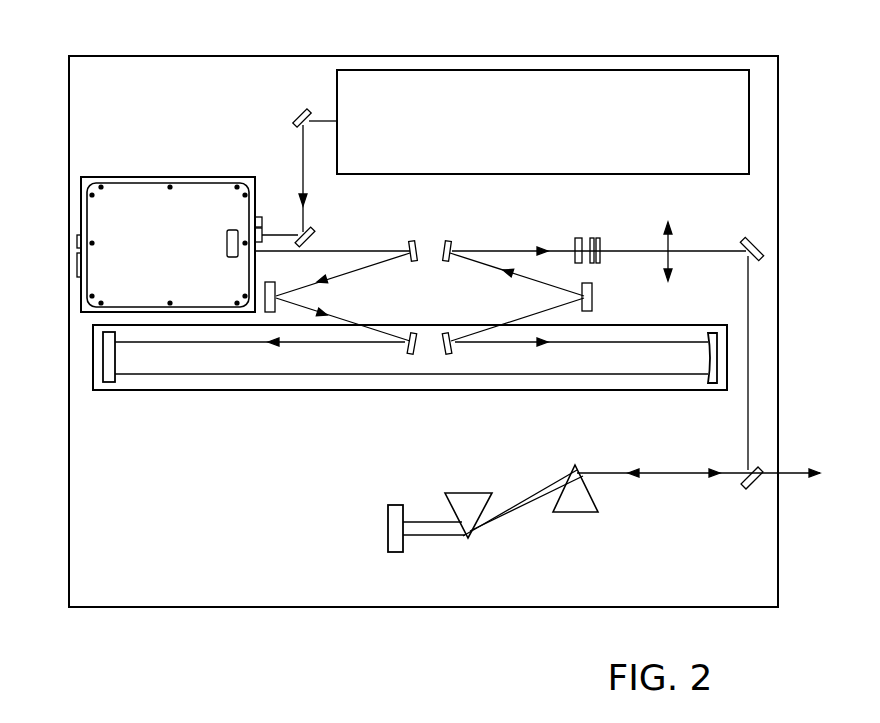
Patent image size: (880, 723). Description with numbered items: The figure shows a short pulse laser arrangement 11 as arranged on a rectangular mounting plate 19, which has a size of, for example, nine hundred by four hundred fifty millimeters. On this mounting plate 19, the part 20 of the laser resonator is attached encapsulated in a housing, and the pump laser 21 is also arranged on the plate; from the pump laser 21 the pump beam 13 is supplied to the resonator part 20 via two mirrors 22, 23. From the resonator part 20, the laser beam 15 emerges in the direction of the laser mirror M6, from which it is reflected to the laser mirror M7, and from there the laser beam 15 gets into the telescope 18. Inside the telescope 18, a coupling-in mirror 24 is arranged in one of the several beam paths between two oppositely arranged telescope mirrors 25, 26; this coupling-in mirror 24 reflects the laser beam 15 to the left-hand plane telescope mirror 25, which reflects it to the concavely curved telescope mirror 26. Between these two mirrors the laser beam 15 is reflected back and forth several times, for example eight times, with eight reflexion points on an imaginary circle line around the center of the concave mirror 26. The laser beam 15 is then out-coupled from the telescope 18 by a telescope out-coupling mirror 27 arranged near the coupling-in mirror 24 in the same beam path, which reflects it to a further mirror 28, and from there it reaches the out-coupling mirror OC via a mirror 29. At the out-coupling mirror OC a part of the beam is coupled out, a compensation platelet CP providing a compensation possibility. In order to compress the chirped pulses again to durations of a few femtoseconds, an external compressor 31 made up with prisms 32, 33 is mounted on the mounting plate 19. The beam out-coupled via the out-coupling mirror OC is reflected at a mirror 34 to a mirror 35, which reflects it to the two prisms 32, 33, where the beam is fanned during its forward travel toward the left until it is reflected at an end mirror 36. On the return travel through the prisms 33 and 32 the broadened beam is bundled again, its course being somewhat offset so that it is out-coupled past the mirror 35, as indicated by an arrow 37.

The short pulse laser arrangement 11 is at (193, 145).
The pump beam 13 is at (300, 153).
The laser beam 15 is at (497, 250).
The telescope 18 is at (703, 327).
The mounting plate 19 is at (580, 56).
The part of the laser resonator 20 is at (157, 177).
The pump laser 21 is at (337, 89).
The mirror 22 is at (294, 119).
The mirror 23 is at (313, 232).
The coupling-in mirror 24 is at (410, 332).
The plane telescope mirror 25 is at (110, 365).
The concavely curved telescope mirror 26 is at (713, 378).
The telescope out-coupling mirror 27 is at (451, 332).
The mirror 28 is at (594, 300).
The mirror 29 is at (448, 242).
The compressor 31 is at (536, 533).
The prism 32 is at (598, 512).
The prism 33 is at (465, 493).
The mirror 34 is at (742, 241).
The mirror 35 is at (752, 487).
The end mirror 36 is at (388, 522).
The arrow 37 is at (798, 478).
The laser mirror M6 is at (410, 242).
The laser mirror M7 is at (278, 289).
The out-coupling mirror OC is at (578, 238).
The compensation platelet CP is at (600, 244).